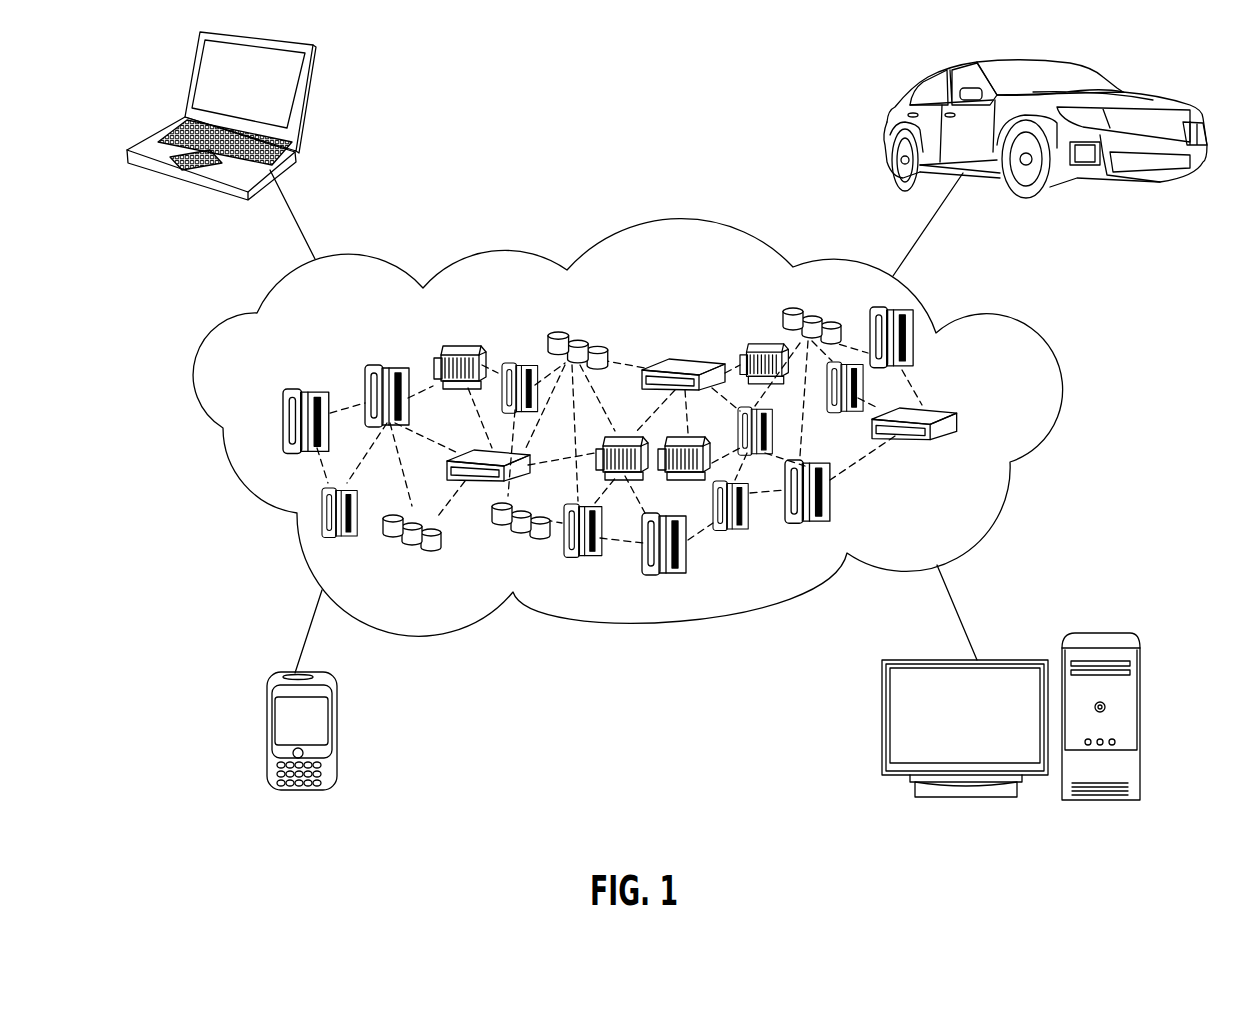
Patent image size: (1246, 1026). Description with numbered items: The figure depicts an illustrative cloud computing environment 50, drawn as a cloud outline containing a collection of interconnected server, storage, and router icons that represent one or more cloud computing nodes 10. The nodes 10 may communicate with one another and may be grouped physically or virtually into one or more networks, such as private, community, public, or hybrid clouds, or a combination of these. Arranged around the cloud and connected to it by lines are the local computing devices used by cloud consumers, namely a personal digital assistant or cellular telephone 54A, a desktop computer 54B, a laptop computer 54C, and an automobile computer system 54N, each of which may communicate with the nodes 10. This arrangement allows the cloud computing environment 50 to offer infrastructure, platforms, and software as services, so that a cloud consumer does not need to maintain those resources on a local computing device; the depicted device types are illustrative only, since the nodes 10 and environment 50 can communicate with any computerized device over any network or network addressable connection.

The cloud computing node 10 is at (1004, 421).
The cloud computing environment 50 is at (1027, 330).
The personal digital assistant or cellular telephone 54A is at (262, 737).
The desktop computer 54B is at (1103, 633).
The laptop computer 54C is at (307, 98).
The automobile computer system 54N is at (890, 107).